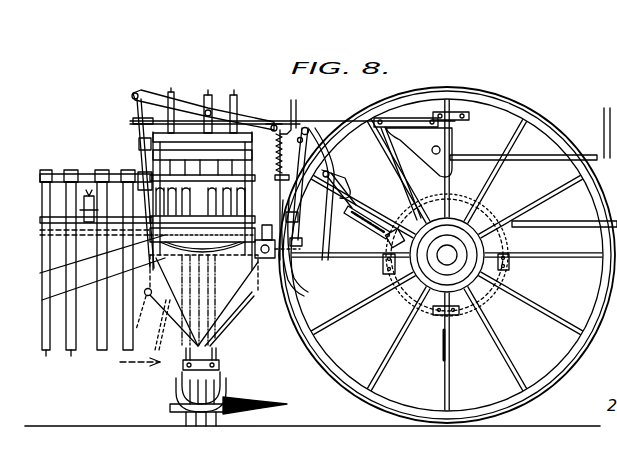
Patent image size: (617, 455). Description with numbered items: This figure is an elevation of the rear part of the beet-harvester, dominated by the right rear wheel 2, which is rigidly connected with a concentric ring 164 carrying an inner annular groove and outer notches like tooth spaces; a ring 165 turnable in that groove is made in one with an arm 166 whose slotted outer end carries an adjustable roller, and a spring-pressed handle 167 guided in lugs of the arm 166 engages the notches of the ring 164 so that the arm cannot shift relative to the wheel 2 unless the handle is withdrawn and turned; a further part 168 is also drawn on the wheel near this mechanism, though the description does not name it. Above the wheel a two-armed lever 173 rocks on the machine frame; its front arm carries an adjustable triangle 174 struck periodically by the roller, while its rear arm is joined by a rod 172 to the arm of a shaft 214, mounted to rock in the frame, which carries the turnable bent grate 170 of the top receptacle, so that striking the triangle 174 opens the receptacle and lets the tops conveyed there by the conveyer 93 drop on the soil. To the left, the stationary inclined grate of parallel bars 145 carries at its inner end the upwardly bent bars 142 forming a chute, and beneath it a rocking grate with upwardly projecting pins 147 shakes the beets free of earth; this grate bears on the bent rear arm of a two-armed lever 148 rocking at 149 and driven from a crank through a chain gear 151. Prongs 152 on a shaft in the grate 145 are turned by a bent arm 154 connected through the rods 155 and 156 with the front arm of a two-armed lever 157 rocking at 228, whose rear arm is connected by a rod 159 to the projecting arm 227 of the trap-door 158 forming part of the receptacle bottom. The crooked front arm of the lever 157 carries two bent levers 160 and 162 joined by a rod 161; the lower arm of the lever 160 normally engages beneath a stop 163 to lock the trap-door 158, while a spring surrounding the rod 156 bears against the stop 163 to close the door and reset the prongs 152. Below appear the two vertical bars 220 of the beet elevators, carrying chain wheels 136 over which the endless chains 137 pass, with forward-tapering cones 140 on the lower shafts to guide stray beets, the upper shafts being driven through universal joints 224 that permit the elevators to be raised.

The rear wheel 2 is at (556, 130).
The conveyer 93 is at (89, 190).
The chain wheels 136 is at (184, 420).
The endless chains 137 is at (220, 356).
The cones 140 is at (256, 400).
The upwardly bent bars 142 is at (140, 178).
The parallel bars 145 is at (84, 260).
The pins 147 is at (240, 305).
The two-armed lever 148 is at (236, 290).
The pivot of two-armed lever 149 is at (270, 258).
The chain gear 151 is at (404, 168).
The prongs 152 is at (86, 284).
The bent arm 154 is at (300, 290).
The rod 155 is at (280, 190).
The upper rod 156 is at (272, 124).
The two-armed lever 157 is at (165, 90).
The trap-door 158 is at (182, 340).
The rod 159 is at (134, 102).
The bent lever 160 is at (307, 127).
The rod 161 is at (328, 155).
The bent lever 162 is at (345, 180).
The stop 163 is at (292, 100).
The concentric ring 164 is at (488, 212).
The ring 165 is at (512, 240).
The arm 166 is at (350, 215).
The spring-pressed handle 167 is at (386, 236).
The bracket 168 is at (384, 272).
The turnable bent grate 170 is at (100, 352).
The rod 172 is at (138, 145).
The two-armed lever 173 is at (390, 118).
The adjustable triangle 174 is at (448, 123).
The shaft 214 is at (60, 174).
The vertical bars 220 is at (182, 384).
The universal joints 224 is at (298, 219).
The projecting arm 227 is at (162, 312).
The pivot of two-armed lever 228 is at (212, 110).